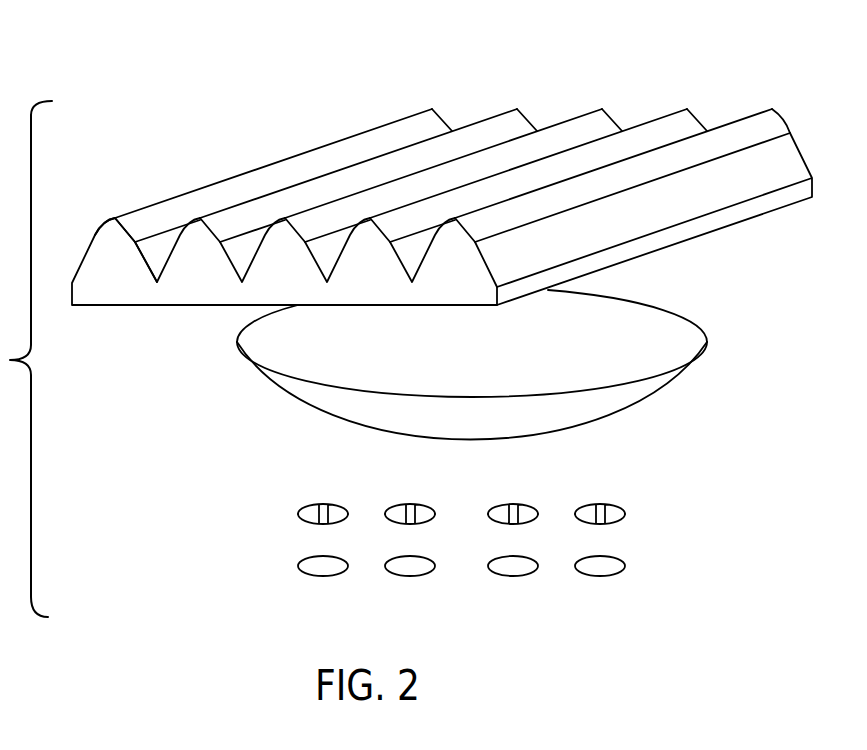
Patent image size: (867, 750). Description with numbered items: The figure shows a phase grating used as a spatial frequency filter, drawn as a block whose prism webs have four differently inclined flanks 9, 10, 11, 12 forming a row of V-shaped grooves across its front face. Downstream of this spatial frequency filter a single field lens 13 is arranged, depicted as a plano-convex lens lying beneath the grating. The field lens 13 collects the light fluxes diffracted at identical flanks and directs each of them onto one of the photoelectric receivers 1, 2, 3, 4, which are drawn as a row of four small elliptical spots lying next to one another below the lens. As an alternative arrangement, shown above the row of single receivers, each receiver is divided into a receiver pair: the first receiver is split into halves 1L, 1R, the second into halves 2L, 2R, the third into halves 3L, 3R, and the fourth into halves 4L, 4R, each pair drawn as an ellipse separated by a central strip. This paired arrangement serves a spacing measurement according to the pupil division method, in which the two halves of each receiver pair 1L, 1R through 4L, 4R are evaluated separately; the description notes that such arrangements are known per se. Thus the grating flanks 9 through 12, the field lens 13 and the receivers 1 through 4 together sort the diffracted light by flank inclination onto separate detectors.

The flank 9 is at (90, 247).
The flank 10 is at (113, 218).
The flank 11 is at (133, 228).
The flank 12 is at (146, 256).
The field lens 13 is at (255, 350).
The receiver pair half 1L is at (308, 510).
The receiver pair half 1R is at (335, 510).
The photoelectric receiver 1 is at (323, 568).
The receiver pair half 2L is at (395, 510).
The receiver pair half 2R is at (422, 510).
The photoelectric receiver 2 is at (410, 568).
The receiver pair half 3L is at (498, 510).
The receiver pair half 3R is at (525, 510).
The photoelectric receiver 3 is at (513, 568).
The receiver pair half 4L is at (585, 510).
The receiver pair half 4R is at (612, 510).
The photoelectric receiver 4 is at (600, 568).